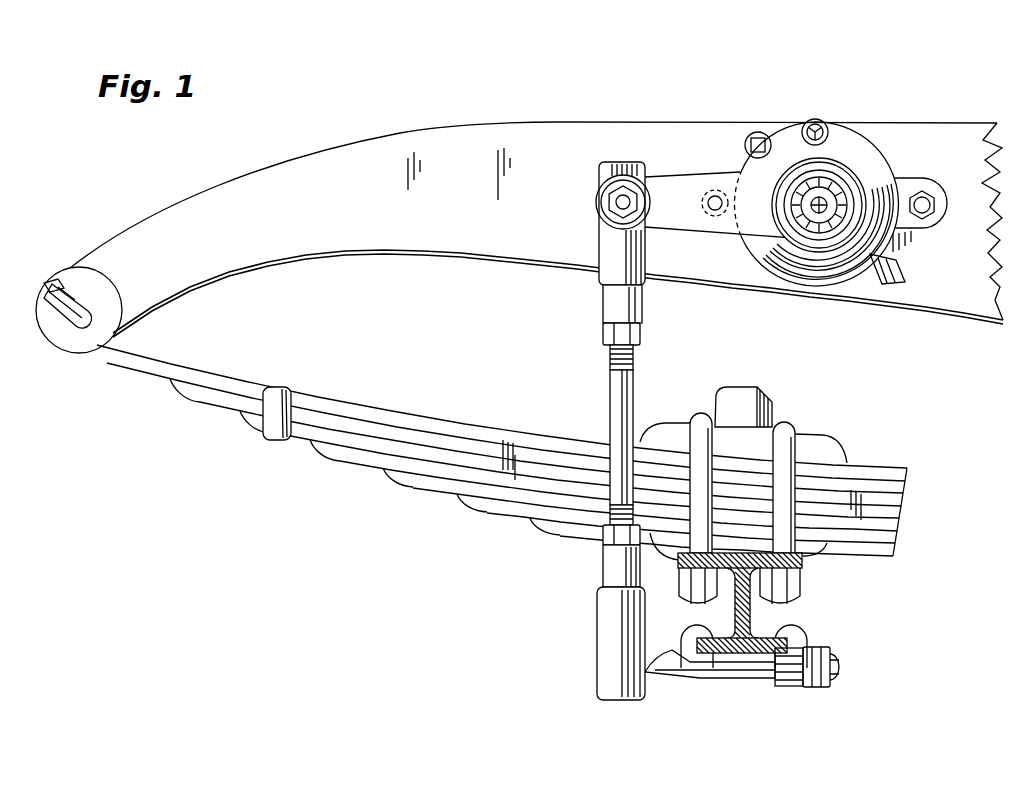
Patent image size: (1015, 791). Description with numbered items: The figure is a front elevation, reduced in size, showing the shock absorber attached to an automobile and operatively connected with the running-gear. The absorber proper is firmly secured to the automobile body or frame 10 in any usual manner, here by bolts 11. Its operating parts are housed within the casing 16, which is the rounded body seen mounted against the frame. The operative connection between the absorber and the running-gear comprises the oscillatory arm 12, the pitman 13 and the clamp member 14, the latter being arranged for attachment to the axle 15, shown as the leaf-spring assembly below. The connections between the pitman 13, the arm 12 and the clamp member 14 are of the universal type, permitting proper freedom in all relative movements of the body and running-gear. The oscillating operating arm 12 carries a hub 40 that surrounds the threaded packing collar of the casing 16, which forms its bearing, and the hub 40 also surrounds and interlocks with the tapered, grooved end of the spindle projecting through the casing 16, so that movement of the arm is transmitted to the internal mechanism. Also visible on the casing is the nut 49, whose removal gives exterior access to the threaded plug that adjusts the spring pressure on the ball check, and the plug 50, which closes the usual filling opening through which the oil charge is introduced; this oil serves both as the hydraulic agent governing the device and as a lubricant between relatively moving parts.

The automobile body or frame 10 is at (592, 112).
The bolts 11 is at (708, 190).
The oscillatory arm 12 is at (690, 214).
The pitman 13 is at (620, 408).
The clamp member 14 is at (728, 664).
The axle 15 is at (752, 612).
The casing 16 is at (866, 163).
The hub 40 is at (781, 200).
The nut 49 is at (762, 132).
The plug 50 is at (828, 126).